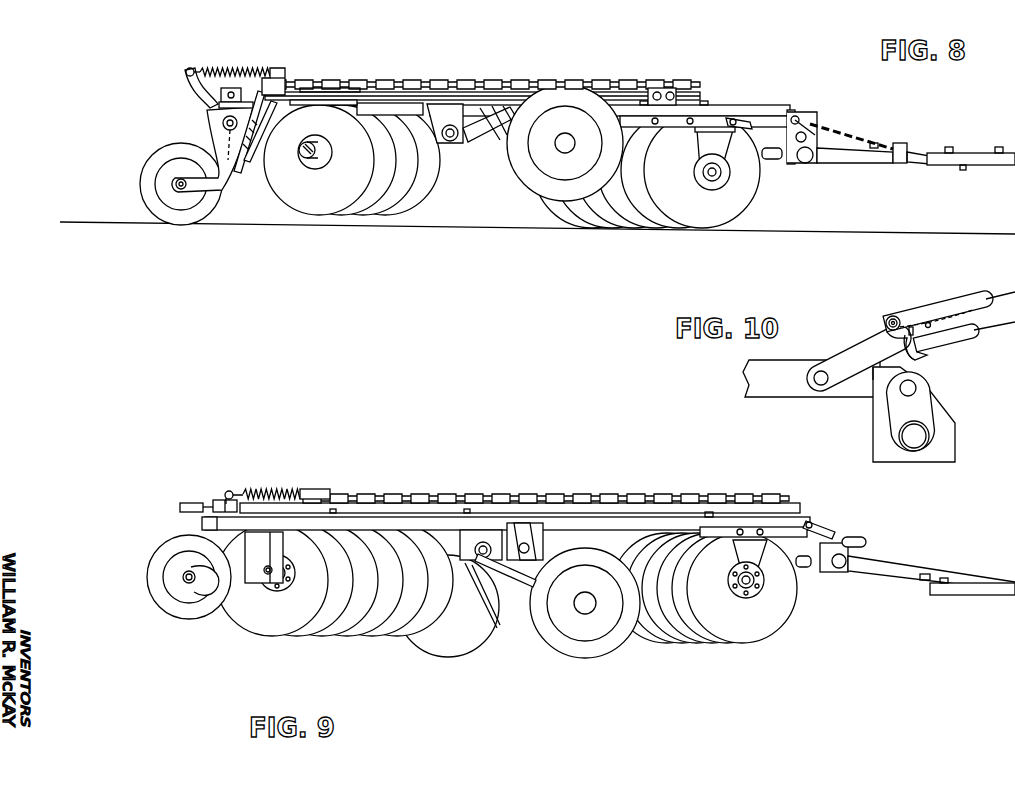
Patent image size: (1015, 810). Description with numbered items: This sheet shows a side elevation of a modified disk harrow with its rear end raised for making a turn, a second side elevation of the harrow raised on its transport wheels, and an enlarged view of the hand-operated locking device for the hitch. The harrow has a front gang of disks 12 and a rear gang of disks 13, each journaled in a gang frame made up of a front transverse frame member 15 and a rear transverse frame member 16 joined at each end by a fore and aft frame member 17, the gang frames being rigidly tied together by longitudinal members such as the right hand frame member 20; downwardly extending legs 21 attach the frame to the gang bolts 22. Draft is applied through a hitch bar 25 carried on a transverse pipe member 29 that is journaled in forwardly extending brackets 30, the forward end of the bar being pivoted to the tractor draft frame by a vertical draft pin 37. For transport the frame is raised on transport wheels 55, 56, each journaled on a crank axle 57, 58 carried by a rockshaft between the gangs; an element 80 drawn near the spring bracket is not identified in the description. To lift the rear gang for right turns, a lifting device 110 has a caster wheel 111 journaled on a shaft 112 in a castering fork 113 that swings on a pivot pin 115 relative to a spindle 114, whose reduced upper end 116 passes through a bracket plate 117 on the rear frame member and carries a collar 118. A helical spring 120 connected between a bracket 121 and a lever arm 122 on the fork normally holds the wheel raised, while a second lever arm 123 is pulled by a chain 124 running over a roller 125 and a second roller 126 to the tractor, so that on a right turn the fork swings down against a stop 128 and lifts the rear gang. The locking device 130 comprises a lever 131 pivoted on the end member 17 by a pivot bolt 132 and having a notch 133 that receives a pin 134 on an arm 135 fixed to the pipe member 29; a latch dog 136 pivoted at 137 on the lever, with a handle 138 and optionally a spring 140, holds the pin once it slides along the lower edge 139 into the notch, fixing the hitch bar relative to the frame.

In FIG. 8, the front gang of disks 12 is at (654, 234).
In FIG. 9, the front gang of disks 12 is at (746, 654).
In FIG. 8, the rear gang of disks 13 is at (372, 230).
In FIG. 9, the rear gang of disks 13 is at (337, 644).
In FIG. 8, the front transverse frame member 15 is at (372, 110).
In FIG. 8, the rear transverse frame member 16 is at (647, 127).
In FIG. 9, the fore and aft extending frame member 17 is at (718, 537).
In FIG. 8, the longitudinal frame member 20 is at (723, 110).
In FIG. 9, the longitudinal frame member 20 is at (592, 517).
In FIG. 10, the longitudinal frame member 20 is at (760, 388).
In FIG. 8, the downwardly extending legs 21 is at (697, 160).
In FIG. 9, the downwardly extending legs 21 is at (278, 548).
In FIG. 8, the gang bolts 22 is at (310, 160).
In FIG. 9, the gang bolts 22 is at (270, 590).
In FIG. 8, the hitch bar 25 is at (865, 164).
In FIG. 9, the hitch bar 25 is at (899, 576).
In FIG. 8, the transverse pipe member 29 is at (775, 160).
In FIG. 9, the transverse pipe member 29 is at (848, 560).
In FIG. 10, the transverse pipe member 29 is at (910, 442).
In FIG. 8, the forwardly extending brackets 30 is at (802, 137).
In FIG. 10, the forwardly extending brackets 30 is at (880, 448).
In FIG. 8, the draft pin 37 is at (998, 152).
In FIG. 9, the transport wheel 55 is at (452, 657).
In FIG. 8, the transport wheel 56 is at (541, 103).
In FIG. 9, the transport wheel 56 is at (583, 658).
In FIG. 9, the crank axle 57 is at (480, 584).
In FIG. 8, the crank axle 58 is at (482, 140).
In FIG. 9, the crank axle 58 is at (522, 577).
In FIG. 9, the control rod 80 is at (203, 520).
In FIG. 8, the lifting device 110 is at (217, 45).
In FIG. 9, the lifting device 110 is at (209, 477).
In FIG. 8, the lifting wheel 111 is at (146, 186).
In FIG. 9, the lifting wheel 111 is at (160, 560).
In FIG. 8, the shaft 112 is at (180, 185).
In FIG. 9, the shaft 112 is at (187, 583).
In FIG. 8, the castering fork 113 is at (215, 172).
In FIG. 9, the castering fork 113 is at (200, 572).
In FIG. 8, the spindle 114 is at (219, 105).
In FIG. 8, the pivot pin 115 is at (223, 123).
In FIG. 8, the reduced upper end 116 is at (236, 90).
In FIG. 8, the bracket plate 117 is at (203, 96).
In FIG. 8, the collar 118 is at (226, 88).
In FIG. 8, the spring 120 is at (212, 66).
In FIG. 9, the spring 120 is at (258, 489).
In FIG. 8, the bracket 121 is at (278, 72).
In FIG. 9, the bracket 121 is at (308, 489).
In FIG. 8, the lever arm 122 is at (187, 72).
In FIG. 9, the lever arm 122 is at (229, 490).
In FIG. 8, the second lever arm 123 is at (243, 172).
In FIG. 8, the chain 124 is at (406, 80).
In FIG. 8, the roller 125 is at (305, 85).
In FIG. 8, the second roller 126 is at (653, 88).
In FIG. 8, the stop 128 is at (252, 151).
In FIG. 10, the locking device 130 is at (968, 284).
In FIG. 8, the lever 131 is at (755, 130).
In FIG. 9, the lever 131 is at (830, 531).
In FIG. 8, the pivot bolt 132 is at (795, 118).
In FIG. 9, the pivot bolt 132 is at (806, 521).
In FIG. 10, the pivot bolt 132 is at (823, 371).
In FIG. 10, the notch 133 is at (896, 345).
In FIG. 8, the pin 134 is at (804, 142).
In FIG. 10, the pin 134 is at (915, 388).
In FIG. 8, the arm 135 is at (810, 140).
In FIG. 9, the arm 135 is at (830, 573).
In FIG. 10, the arm 135 is at (919, 406).
In FIG. 10, the latch dog 136 is at (930, 352).
In FIG. 10, the pivot 137 is at (892, 315).
In FIG. 9, the handle 138 is at (855, 538).
In FIG. 10, the lower edge 139 is at (877, 369).
In FIG. 10, the spring 140 is at (920, 320).